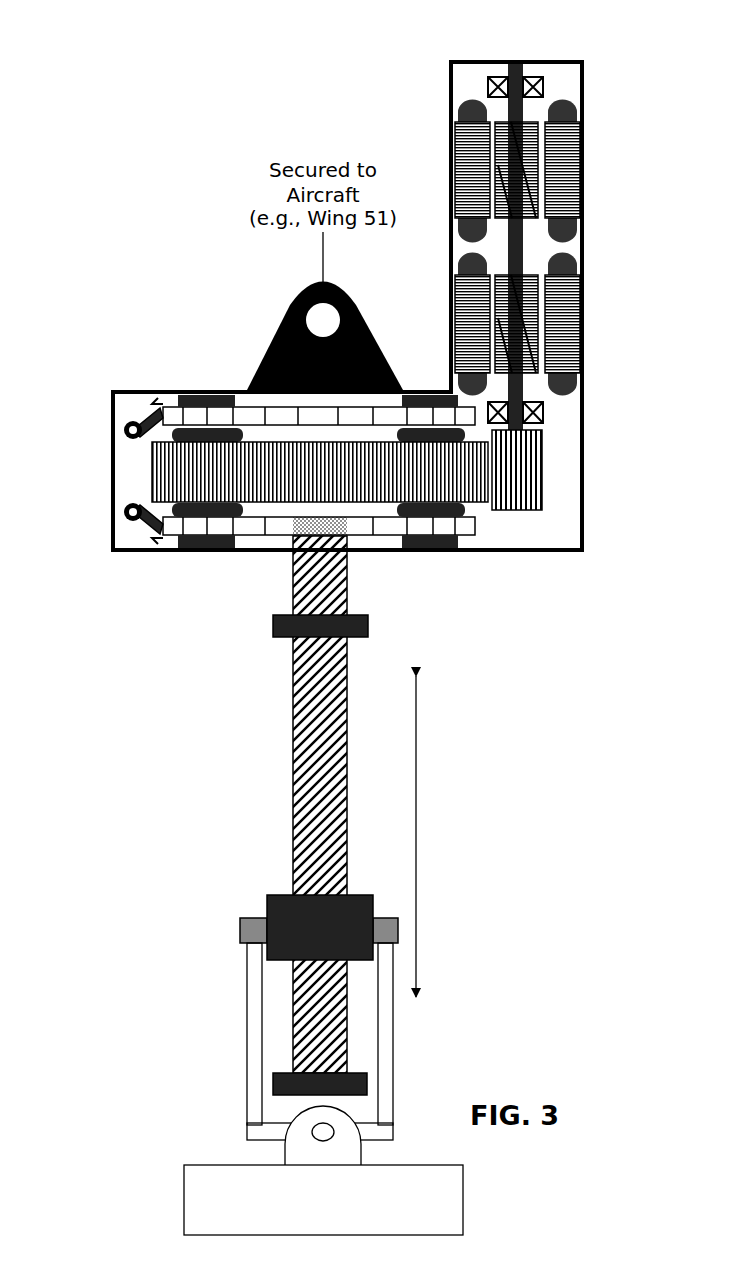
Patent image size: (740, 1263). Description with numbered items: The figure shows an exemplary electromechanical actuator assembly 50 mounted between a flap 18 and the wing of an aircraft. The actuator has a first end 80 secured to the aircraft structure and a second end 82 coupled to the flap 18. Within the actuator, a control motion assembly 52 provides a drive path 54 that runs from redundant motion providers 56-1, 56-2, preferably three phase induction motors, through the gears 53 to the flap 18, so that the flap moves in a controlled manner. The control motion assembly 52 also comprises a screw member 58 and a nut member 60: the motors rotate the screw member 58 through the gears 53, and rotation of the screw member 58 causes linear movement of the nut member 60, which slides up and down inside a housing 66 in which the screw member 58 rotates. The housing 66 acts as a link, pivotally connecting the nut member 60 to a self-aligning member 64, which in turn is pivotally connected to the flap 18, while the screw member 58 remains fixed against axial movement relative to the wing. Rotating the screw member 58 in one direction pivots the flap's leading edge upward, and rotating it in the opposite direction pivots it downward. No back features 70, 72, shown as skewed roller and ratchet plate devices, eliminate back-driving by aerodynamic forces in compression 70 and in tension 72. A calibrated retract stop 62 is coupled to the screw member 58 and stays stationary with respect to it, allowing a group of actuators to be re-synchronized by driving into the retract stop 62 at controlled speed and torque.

The flap 18 is at (311, 1209).
The electromechanical actuator assembly 50 is at (630, 58).
The control motion assembly 52 is at (430, 352).
The gears 53 is at (525, 475).
The drive path 54 is at (416, 836).
The first motion provider 56-1 is at (582, 182).
The second motion provider 56-2 is at (582, 320).
The screw member 58 is at (295, 725).
The nut member 60 is at (262, 930).
The retract stop 62 is at (272, 630).
The self-aligning member 64 is at (312, 1131).
The housing 66 is at (262, 1043).
The no back feature in compression 70 is at (124, 431).
The no back feature in tension 72 is at (124, 518).
The first end 80 is at (295, 293).
The second end 82 is at (270, 1132).